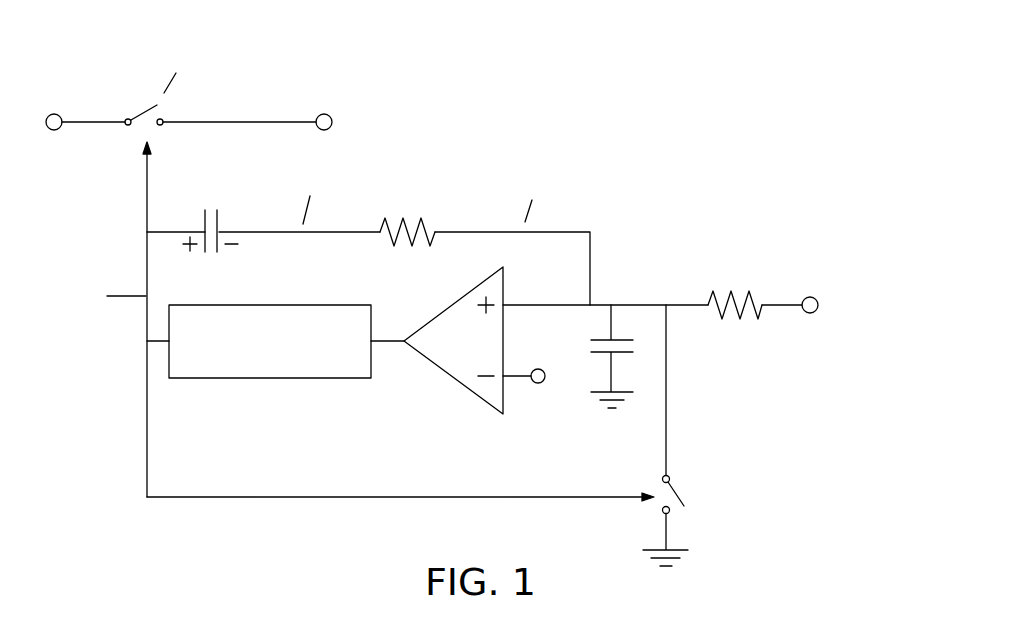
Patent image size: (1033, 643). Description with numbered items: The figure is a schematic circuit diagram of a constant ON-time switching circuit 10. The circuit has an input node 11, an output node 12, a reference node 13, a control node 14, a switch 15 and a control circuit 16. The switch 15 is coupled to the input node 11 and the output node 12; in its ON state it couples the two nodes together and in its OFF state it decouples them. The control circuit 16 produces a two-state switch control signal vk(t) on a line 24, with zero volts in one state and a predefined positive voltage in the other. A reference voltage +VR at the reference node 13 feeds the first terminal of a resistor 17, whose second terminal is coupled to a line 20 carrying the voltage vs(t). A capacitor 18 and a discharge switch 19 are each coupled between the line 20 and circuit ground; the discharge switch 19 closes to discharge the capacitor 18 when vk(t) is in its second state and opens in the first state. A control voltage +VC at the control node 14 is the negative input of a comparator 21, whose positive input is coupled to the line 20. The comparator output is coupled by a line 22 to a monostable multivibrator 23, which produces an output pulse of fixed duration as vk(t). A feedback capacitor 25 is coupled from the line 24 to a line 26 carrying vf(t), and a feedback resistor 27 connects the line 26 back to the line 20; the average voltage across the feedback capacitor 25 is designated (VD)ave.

The constant ON-time switching circuit 10 is at (636, 85).
The input node 11 is at (55, 58).
The output node 12 is at (328, 58).
The reference node 13 is at (855, 283).
The control node 14 is at (552, 433).
The switch 15 is at (143, 95).
The control circuit 16 is at (112, 235).
The resistor 17 is at (740, 283).
The capacitor 18 is at (633, 295).
The discharge switch 19 is at (688, 478).
The line 20 is at (578, 222).
The comparator 21 is at (460, 392).
The line 22 is at (390, 345).
The monostable multivibrator 23 is at (245, 385).
The line 24 is at (146, 383).
The feedback capacitor 25 is at (230, 212).
The line 26 is at (347, 224).
The feedback resistor 27 is at (435, 218).